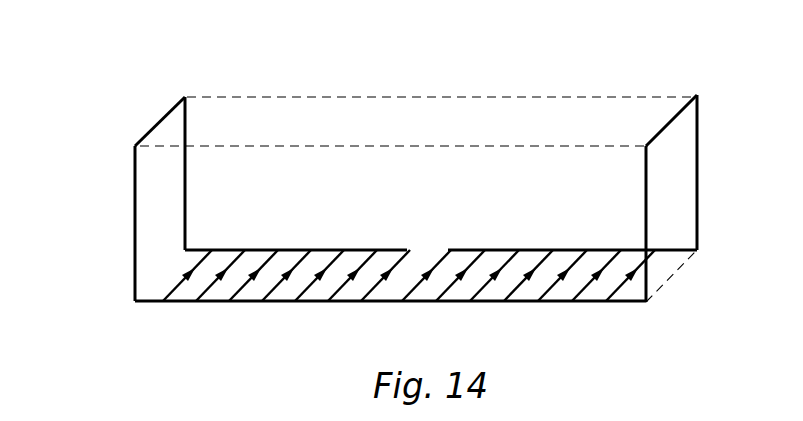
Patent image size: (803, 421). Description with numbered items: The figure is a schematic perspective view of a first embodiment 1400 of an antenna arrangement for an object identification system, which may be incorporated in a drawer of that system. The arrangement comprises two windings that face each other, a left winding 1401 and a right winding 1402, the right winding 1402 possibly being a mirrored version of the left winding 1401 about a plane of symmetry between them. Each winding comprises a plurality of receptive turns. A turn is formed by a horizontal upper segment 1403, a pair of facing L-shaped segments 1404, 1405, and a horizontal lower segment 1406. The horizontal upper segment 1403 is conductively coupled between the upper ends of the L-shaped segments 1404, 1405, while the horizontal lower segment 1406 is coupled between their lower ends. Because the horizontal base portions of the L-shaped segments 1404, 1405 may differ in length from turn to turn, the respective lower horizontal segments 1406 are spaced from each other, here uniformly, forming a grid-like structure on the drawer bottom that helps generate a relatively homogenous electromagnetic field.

The first embodiment of antenna arrangement 1400 is at (165, 44).
The left winding 1401 is at (312, 200).
The right winding 1402 is at (546, 199).
The horizontal upper segment 1403 is at (158, 121).
The L-shaped segment 1404 is at (126, 289).
The L-shaped segment 1405 is at (190, 217).
The horizontal lower segment 1406 is at (187, 293).